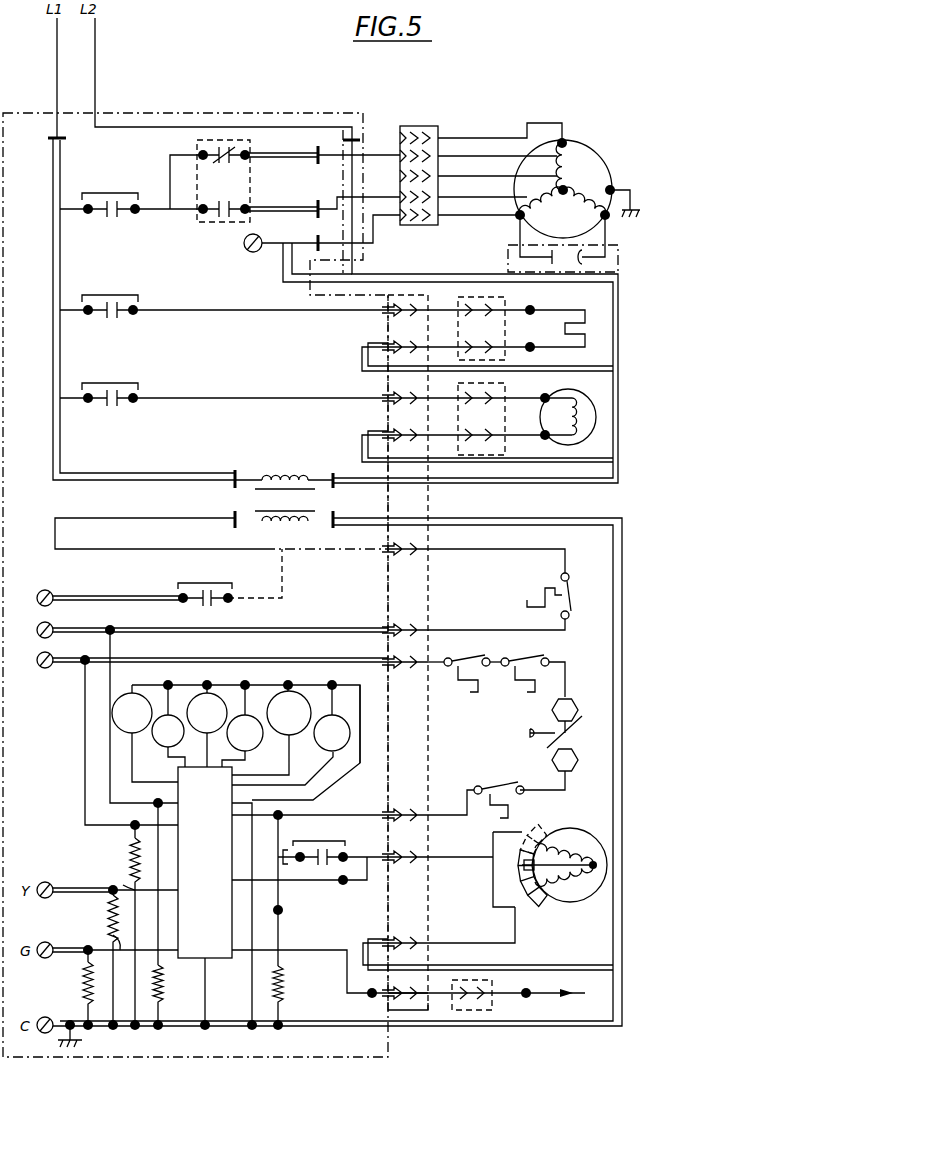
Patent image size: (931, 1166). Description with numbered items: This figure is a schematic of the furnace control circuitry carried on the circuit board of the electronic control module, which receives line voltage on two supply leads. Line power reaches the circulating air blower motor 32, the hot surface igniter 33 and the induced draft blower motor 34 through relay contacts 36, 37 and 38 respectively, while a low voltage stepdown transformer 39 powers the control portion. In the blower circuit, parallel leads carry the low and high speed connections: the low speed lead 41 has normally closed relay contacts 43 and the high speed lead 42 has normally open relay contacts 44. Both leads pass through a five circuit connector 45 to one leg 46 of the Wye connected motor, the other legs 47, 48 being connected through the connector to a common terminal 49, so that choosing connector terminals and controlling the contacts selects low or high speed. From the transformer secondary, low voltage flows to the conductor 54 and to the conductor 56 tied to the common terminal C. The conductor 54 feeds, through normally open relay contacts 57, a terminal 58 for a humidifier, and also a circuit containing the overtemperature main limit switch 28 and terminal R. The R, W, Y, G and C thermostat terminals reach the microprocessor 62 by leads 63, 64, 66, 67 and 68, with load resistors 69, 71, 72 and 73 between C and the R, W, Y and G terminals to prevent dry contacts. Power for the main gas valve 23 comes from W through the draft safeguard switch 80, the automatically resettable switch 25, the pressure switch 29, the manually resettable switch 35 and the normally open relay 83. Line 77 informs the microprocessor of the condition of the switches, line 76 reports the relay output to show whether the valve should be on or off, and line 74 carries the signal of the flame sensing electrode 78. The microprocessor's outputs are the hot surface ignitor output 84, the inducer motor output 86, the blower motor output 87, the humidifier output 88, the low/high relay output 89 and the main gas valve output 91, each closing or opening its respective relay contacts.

The main gas valve 23 is at (598, 851).
The automatically resettable switch 25 is at (505, 668).
The main limit switch 28 is at (571, 575).
The pressure switch 29 is at (578, 721).
The circulating air blower motor 32 is at (554, 188).
The hot surface igniter 33 is at (590, 322).
The induced draft blower motor 34 is at (600, 413).
The manually resettable switch 35 is at (481, 798).
The relay contacts 36 is at (80, 192).
The relay contacts 37 is at (142, 302).
The relay contacts 38 is at (142, 390).
The low voltage stepdown transformer 39 is at (250, 503).
The low speed lead 41 is at (290, 150).
The high speed lead 42 is at (282, 207).
The normally closed relay contacts 43 is at (222, 140).
The normally open relay contacts 44 is at (218, 224).
The five circuit connector 45 is at (412, 125).
The leg of the Wye connected blower motor 46 is at (572, 172).
The leg of the Wye connected blower motor 47 is at (600, 201).
The leg of the Wye connected blower motor 48 is at (520, 224).
The common terminal 49 is at (258, 253).
The conductor 54 is at (100, 516).
The conductor 56 is at (622, 546).
The normally open relay contacts 57 is at (236, 594).
The terminal 58 is at (50, 591).
The microprocessor 62 is at (215, 921).
The lead 63 is at (114, 652).
The lead 64 is at (84, 708).
The lead 66 is at (123, 885).
The lead 67 is at (110, 928).
The lead 68 is at (208, 998).
The load resistor 69 is at (165, 994).
The load resistor 71 is at (130, 852).
The load resistor 72 is at (106, 907).
The load resistor 73 is at (82, 986).
The line 74 is at (305, 957).
The line 76 is at (315, 881).
The line 77 is at (243, 815).
The flame sensing electrode 78 is at (527, 998).
The draft safeguard switch 80 is at (453, 661).
The normally open relay 83 is at (348, 849).
The hot surface ignitor output 84 is at (130, 693).
The inducer motor output 86 is at (163, 746).
The blower motor output 87 is at (228, 682).
The humidifier output 88 is at (259, 705).
The low/high relay output 89 is at (305, 694).
The main gas valve output 91 is at (350, 722).